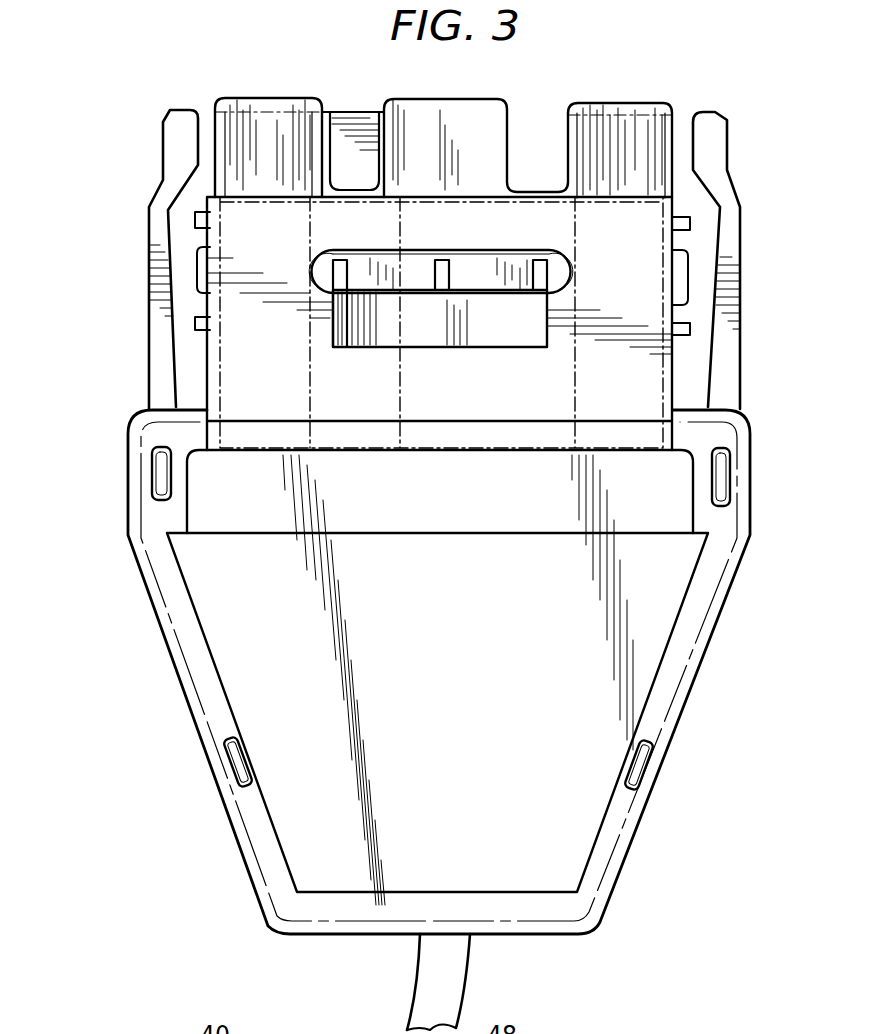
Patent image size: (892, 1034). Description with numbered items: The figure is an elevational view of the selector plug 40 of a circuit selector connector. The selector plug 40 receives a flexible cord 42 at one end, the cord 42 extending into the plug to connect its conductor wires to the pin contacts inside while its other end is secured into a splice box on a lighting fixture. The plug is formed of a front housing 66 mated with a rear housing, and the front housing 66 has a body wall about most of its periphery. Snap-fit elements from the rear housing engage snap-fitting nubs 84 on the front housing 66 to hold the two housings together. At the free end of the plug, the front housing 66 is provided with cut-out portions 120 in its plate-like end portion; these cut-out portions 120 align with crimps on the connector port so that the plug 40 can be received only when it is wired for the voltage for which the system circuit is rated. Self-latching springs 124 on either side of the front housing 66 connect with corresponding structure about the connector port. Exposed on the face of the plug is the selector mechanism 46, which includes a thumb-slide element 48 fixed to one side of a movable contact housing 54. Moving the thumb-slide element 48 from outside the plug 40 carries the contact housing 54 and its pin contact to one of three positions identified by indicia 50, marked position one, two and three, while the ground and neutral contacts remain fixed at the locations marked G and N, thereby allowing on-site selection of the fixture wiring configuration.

The selector plug 40 is at (752, 255).
The flexible cord 42 is at (461, 977).
The selector mechanism 46 is at (468, 358).
The thumb-slide element 48 is at (352, 348).
The indicia 50 is at (482, 221).
The movable contact housing 54 is at (349, 98).
The front housing 66 is at (676, 703).
The snap-fitting nubs 84 is at (725, 482).
The cut-out portions 120 is at (568, 130).
The self-latching springs 124 is at (155, 210).